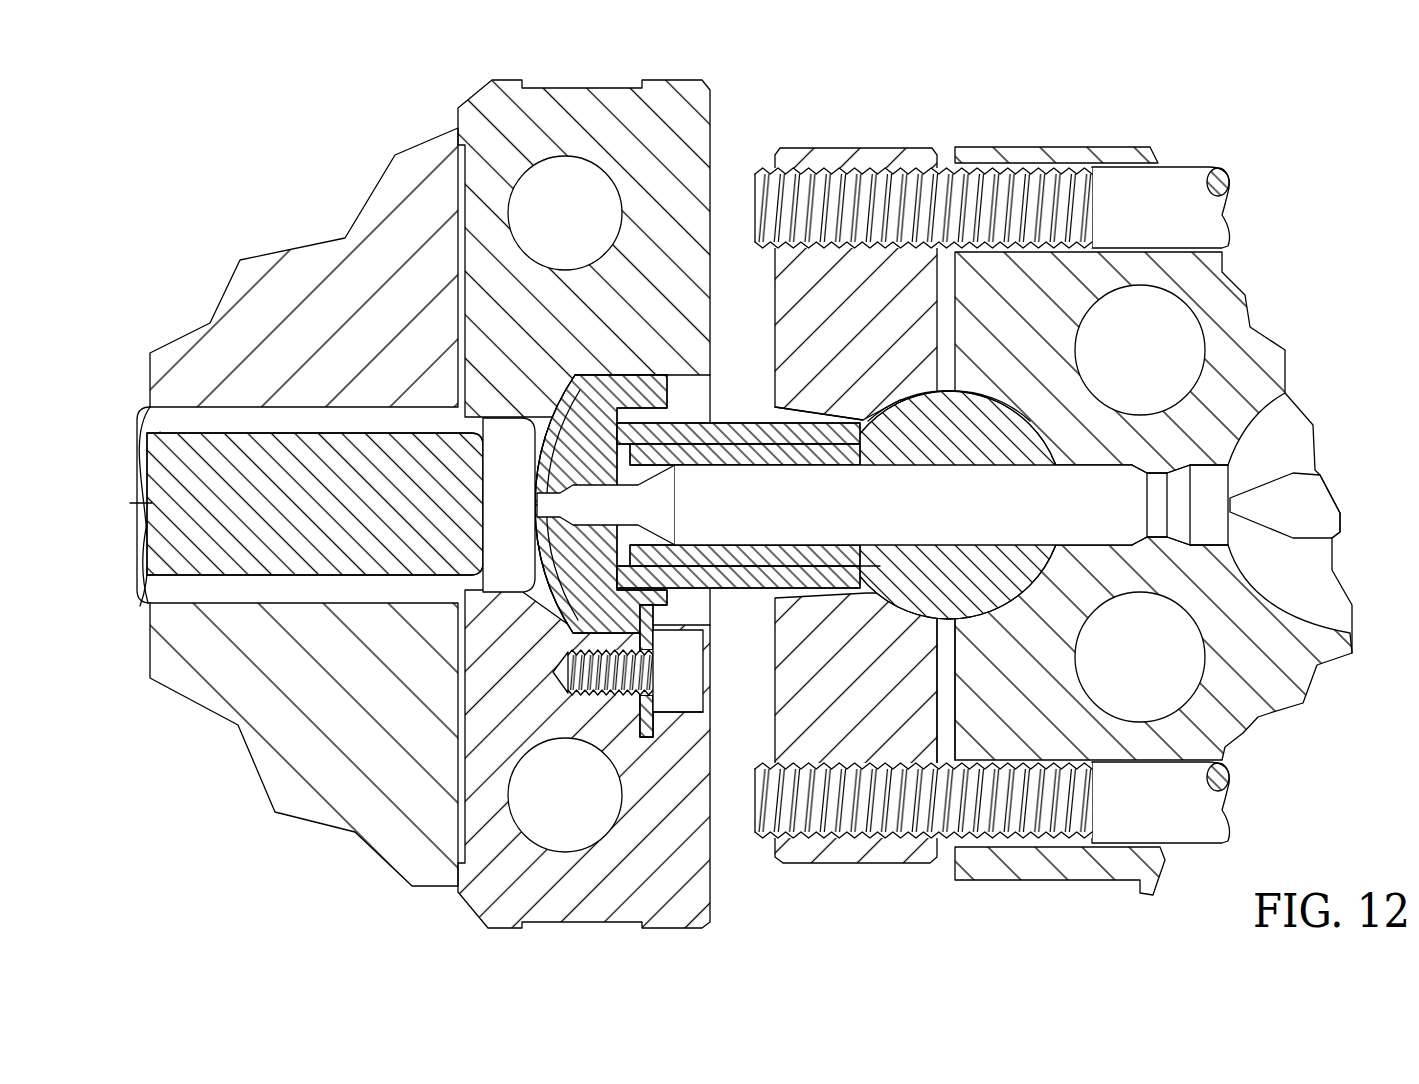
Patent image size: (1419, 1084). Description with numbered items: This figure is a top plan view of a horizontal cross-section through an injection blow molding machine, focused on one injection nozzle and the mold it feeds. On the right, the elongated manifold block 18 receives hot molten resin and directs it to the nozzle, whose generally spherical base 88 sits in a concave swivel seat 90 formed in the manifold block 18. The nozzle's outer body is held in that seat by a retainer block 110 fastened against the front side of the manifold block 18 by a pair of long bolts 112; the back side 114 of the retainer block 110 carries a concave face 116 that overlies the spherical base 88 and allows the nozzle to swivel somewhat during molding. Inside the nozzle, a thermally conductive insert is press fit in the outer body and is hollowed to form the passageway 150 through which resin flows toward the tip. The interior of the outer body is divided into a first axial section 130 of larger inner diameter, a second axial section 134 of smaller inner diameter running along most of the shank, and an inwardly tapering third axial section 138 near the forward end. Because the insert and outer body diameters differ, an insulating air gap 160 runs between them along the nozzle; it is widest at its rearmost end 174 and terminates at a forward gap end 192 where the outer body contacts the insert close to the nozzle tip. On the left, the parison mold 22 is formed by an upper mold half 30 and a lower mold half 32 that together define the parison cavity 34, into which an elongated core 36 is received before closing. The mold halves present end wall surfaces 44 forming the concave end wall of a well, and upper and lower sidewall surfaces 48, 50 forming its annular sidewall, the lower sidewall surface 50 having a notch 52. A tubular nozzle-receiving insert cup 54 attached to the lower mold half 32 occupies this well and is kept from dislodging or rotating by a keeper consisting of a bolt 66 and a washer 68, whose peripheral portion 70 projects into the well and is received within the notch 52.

The manifold block 18 is at (1222, 305).
The parison mold 22 is at (437, 127).
The upper mold half 30 is at (662, 118).
The lower mold half 32 is at (660, 890).
The parison cavity 34 is at (227, 420).
The elongated core 36 is at (178, 508).
The end wall surfaces 44 is at (492, 428).
The upper sidewall surface 48 is at (587, 458).
The lower sidewall surface 50 is at (627, 655).
The notch 52 is at (697, 718).
The nozzle-receiving insert cup 54 is at (612, 382).
The bolt 66 is at (683, 678).
The washer 68 is at (647, 723).
The peripheral portion 70 is at (653, 623).
The spherical base 88 is at (990, 413).
The concave swivel seat 90 is at (1020, 413).
The retainer block 110 is at (843, 307).
The long bolts 112 is at (1173, 183).
The back side 114 is at (937, 698).
The concave face 116 is at (902, 383).
The first axial section 130 is at (950, 415).
The second axial section 134 is at (740, 432).
The third axial section 138 is at (608, 378).
The passageway 150 is at (795, 511).
The insulating air gap 160 is at (678, 505).
The rearmost end 174 is at (877, 553).
The gap end 192 is at (578, 505).